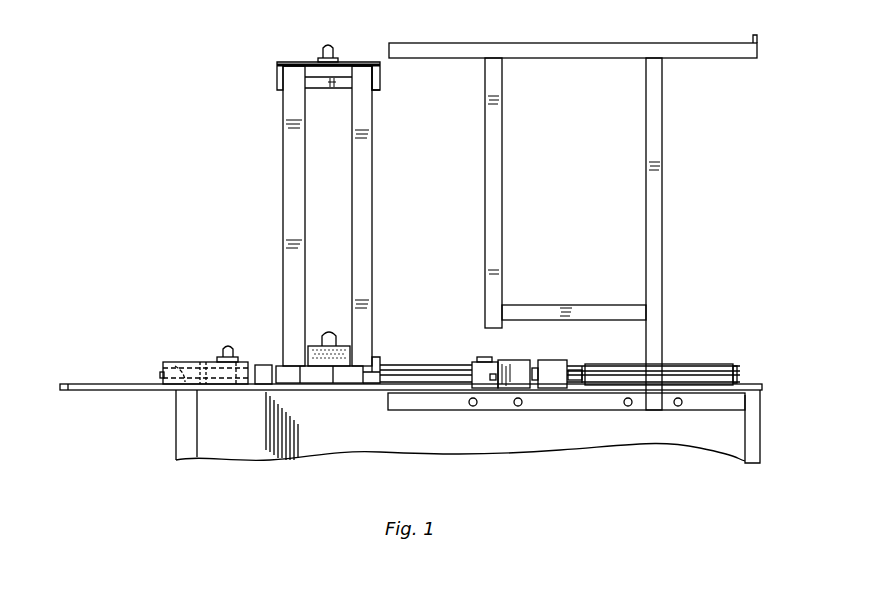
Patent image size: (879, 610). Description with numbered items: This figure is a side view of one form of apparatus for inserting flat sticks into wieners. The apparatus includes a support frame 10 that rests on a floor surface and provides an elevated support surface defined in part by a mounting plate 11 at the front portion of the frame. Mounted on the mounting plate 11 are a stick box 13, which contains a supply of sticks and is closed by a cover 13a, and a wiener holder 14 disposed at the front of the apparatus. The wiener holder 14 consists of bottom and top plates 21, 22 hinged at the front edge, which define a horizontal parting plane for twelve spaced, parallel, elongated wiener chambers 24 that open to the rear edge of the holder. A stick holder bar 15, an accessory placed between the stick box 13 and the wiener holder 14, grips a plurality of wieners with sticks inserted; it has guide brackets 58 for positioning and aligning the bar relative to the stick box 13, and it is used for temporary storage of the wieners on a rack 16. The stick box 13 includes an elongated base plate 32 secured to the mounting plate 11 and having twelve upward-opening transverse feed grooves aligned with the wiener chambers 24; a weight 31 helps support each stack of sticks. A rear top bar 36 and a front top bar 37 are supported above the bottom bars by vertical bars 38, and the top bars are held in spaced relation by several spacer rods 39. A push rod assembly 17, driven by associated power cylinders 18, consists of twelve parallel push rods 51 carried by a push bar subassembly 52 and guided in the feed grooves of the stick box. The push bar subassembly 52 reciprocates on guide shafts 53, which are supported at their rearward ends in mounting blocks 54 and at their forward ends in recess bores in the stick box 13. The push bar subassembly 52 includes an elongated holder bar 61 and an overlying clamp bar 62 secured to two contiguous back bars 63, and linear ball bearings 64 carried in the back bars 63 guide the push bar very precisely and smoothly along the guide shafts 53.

The support frame 10 is at (176, 437).
The mounting plate 11 is at (100, 392).
The stick box 13 is at (311, 185).
The cover 13a is at (303, 62).
The wiener holder 14 is at (200, 355).
The stick holder bar 15 is at (264, 376).
The rack 16 is at (664, 206).
The push rod assembly 17 is at (474, 352).
The power cylinders 18 is at (706, 358).
The bottom plate 21 is at (160, 378).
The top plate 22 is at (180, 366).
The wiener chambers 24 is at (238, 362).
The weight 31 is at (318, 346).
The base plate 32 is at (370, 384).
The rear top bar 36 is at (382, 80).
The front top bar 37 is at (278, 78).
The vertical bars 38 is at (290, 176).
The spacer rods 39 is at (333, 90).
The push rods 51 is at (428, 372).
The push bar subassembly 52 is at (510, 352).
The guide shafts 53 is at (394, 366).
The mounting blocks 54 is at (560, 366).
The guide brackets 58 is at (320, 384).
The holder bar 61 is at (482, 384).
The clamp bar 62 is at (492, 354).
The back bars 63 is at (508, 384).
The linear ball bearings 64 is at (533, 384).